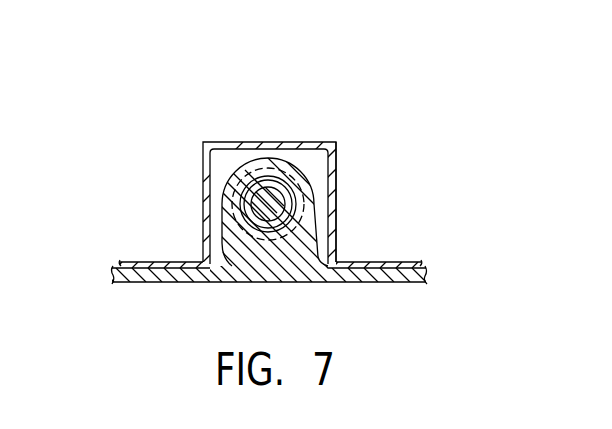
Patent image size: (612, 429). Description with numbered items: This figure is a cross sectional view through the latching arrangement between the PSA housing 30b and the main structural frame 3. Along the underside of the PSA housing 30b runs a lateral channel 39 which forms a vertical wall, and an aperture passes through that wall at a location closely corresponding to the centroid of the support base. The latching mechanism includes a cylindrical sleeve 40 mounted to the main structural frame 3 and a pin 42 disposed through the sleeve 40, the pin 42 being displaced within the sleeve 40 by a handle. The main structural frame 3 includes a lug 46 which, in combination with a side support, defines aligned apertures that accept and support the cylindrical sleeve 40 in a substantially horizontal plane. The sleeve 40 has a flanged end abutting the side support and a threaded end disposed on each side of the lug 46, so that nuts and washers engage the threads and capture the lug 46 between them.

The main structural frame 3 is at (382, 281).
The lateral channel 39 is at (224, 158).
The PSA housing 30b is at (335, 210).
The lug 46 is at (296, 170).
The pin 42 is at (278, 185).
The cylindrical sleeve 40 is at (272, 190).